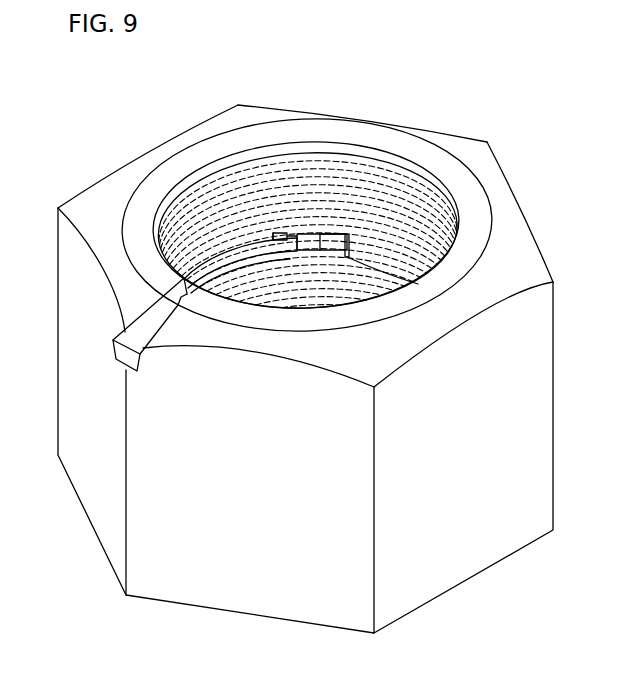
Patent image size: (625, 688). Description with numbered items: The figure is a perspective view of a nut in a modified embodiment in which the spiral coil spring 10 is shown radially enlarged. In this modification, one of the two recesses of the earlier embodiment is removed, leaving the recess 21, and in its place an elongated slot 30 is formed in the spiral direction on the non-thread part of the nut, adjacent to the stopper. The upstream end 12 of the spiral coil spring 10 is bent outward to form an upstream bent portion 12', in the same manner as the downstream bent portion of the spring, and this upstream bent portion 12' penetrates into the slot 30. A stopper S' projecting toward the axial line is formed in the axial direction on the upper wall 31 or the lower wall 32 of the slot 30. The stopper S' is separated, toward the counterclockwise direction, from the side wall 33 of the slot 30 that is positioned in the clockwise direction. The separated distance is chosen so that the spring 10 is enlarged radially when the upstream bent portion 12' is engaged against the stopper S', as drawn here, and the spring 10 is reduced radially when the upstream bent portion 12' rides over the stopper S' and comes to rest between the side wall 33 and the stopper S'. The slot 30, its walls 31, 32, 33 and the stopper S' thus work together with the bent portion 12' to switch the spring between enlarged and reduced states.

The spiral coil spring 10 is at (319, 165).
The upstream end 12 is at (275, 448).
The upstream bent portion 12' is at (248, 155).
The recess 21 is at (112, 353).
The elongated slot 30 is at (280, 233).
The upper wall 31 is at (347, 247).
The lower wall 32 is at (330, 250).
The side wall 33 is at (349, 240).
The stopper S' is at (378, 160).